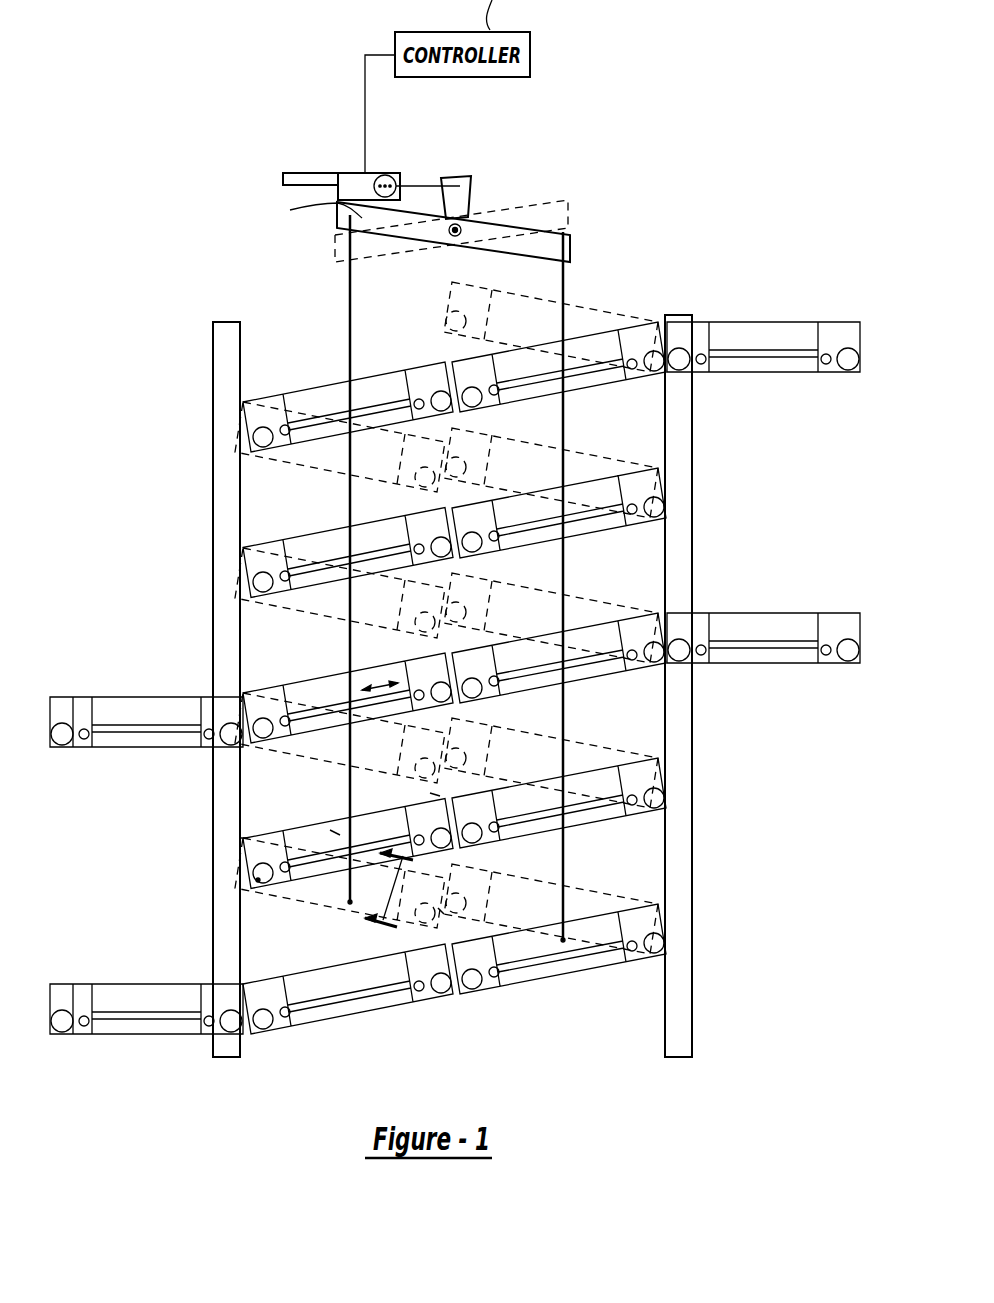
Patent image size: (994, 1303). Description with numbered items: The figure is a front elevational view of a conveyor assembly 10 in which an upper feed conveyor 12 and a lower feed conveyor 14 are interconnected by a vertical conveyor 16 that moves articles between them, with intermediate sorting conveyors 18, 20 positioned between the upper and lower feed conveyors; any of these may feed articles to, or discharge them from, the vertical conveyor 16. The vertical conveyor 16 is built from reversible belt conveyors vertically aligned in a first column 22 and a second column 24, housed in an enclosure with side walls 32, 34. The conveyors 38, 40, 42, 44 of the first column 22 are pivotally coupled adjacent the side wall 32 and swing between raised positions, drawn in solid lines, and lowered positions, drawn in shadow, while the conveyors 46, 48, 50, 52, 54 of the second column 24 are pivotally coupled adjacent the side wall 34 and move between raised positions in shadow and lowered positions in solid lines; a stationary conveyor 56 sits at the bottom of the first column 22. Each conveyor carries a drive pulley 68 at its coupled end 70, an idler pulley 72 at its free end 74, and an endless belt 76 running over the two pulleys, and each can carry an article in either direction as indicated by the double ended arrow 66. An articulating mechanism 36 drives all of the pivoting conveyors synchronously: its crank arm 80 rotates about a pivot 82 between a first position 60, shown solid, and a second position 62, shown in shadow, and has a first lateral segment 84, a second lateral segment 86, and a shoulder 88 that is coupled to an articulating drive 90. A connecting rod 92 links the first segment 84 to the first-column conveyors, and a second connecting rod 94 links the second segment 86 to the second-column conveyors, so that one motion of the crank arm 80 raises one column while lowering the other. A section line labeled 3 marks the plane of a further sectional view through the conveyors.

The section line 3- 3 is at (389, 882).
The conveyor assembly 10 is at (203, 225).
The upper feed conveyor 12 is at (805, 315).
The lower feed conveyor 14 is at (150, 983).
The vertical conveyor 16 is at (192, 312).
The intermediate sorting conveyor 18 is at (745, 667).
The intermediate sorting conveyor 20 is at (103, 697).
The first column 22 is at (280, 296).
The second column 24 is at (613, 242).
The side wall 32 is at (217, 652).
The side wall 34 is at (692, 548).
The articulating mechanism 36 is at (523, 142).
The conveyor 38 is at (310, 388).
The conveyor 40 is at (310, 540).
The conveyor 42 is at (312, 680).
The conveyor 44 is at (255, 830).
The conveyor 46 is at (625, 312).
The conveyor 48 is at (595, 458).
The conveyor 50 is at (598, 605).
The conveyor 52 is at (595, 752).
The conveyor 54 is at (588, 898).
The stationary conveyor 56 is at (313, 968).
The first position 60 is at (408, 215).
The second position 62 is at (395, 250).
The double ended arrow 66 is at (372, 677).
The drive pulley 68 is at (258, 885).
The coupled end 70 is at (243, 838).
The idler pulley 72 is at (442, 910).
The free end 74 is at (440, 795).
The endless belt 76 is at (340, 835).
The crank arm 80 is at (527, 228).
The pivot 82 is at (456, 238).
The first lateral segment 84 is at (309, 211).
The second lateral segment 86 is at (538, 245).
The shoulder 88 is at (474, 190).
The articulating drive 90 is at (336, 174).
The connecting rod 92 is at (350, 298).
The second connecting rod 94 is at (565, 278).